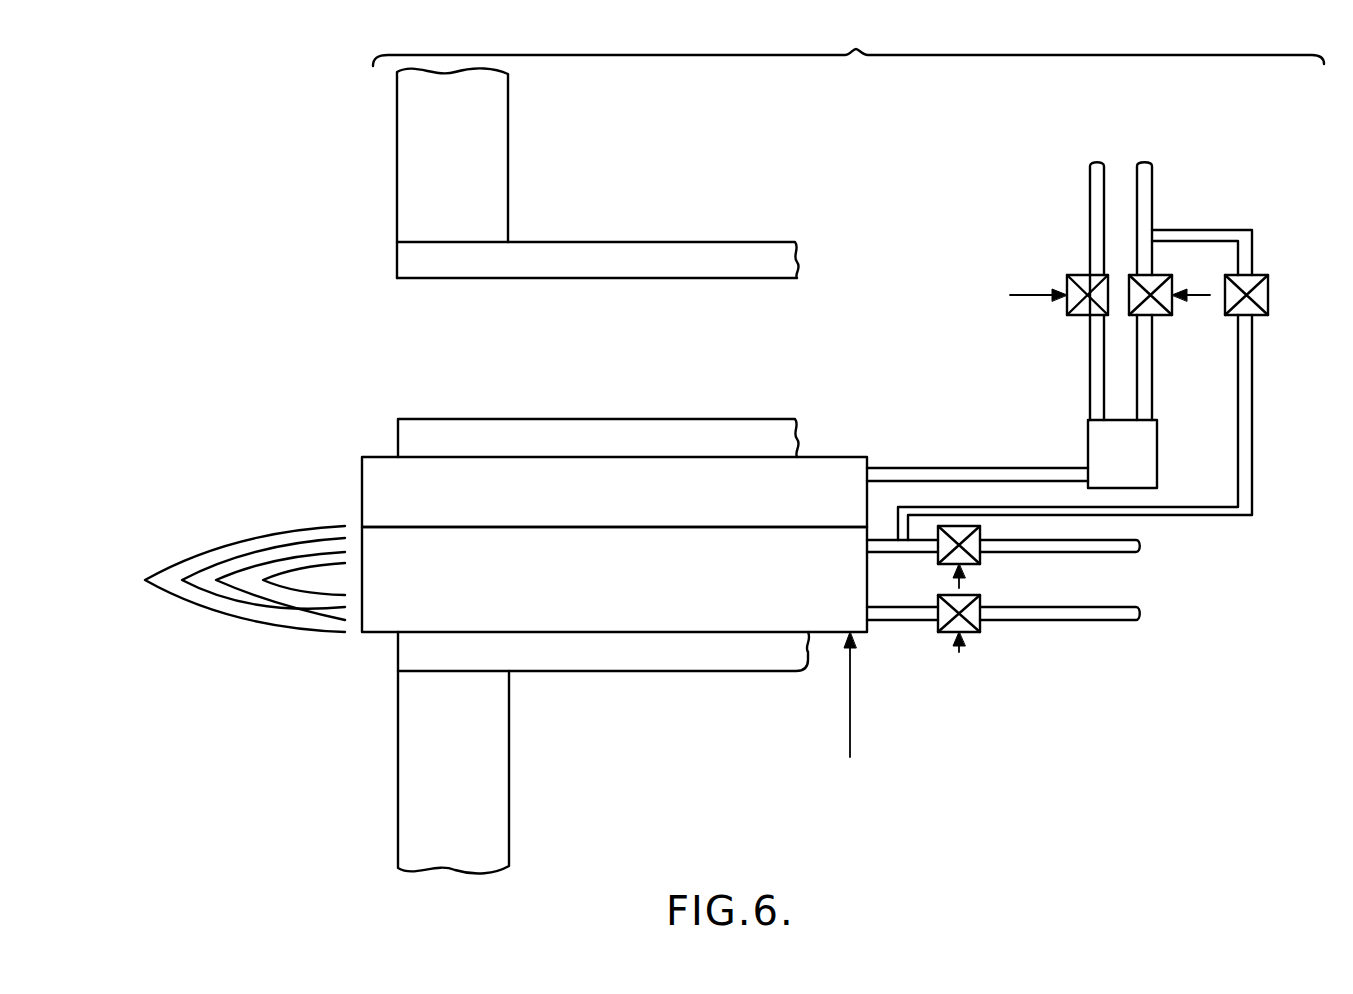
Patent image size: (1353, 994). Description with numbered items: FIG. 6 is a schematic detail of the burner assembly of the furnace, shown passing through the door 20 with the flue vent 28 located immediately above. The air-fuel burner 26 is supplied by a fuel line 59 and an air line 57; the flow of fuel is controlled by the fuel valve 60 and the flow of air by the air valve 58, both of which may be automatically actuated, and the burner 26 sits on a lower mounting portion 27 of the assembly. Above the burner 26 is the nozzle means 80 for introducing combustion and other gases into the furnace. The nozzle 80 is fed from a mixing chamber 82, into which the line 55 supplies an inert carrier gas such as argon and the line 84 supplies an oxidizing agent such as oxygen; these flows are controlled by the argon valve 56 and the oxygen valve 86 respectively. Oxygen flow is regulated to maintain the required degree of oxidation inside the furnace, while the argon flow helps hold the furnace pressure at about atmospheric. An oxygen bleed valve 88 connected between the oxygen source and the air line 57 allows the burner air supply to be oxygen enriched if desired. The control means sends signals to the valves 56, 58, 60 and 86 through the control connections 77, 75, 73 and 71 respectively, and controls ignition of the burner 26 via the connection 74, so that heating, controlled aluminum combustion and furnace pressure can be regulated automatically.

The door 20 is at (508, 148).
The air-fuel burner 26 is at (614, 579).
The lower flange 27 is at (727, 671).
The exhaust or flue vent 28 is at (653, 309).
The inert carrier gas line 55 is at (1090, 372).
The argon valve 56 is at (1065, 285).
The air line 57 is at (880, 554).
The air valve 58 is at (980, 560).
The fuel line 59 is at (887, 620).
The fuel valve 60 is at (980, 630).
The control connection 71 is at (1200, 295).
The control connection 73 is at (962, 660).
The ignition control connection 74 is at (850, 745).
The control connection 75 is at (965, 580).
The control connection 77 is at (1020, 295).
The nozzle means 80 is at (614, 492).
The mixing chamber 82 is at (1157, 455).
The oxygen line 84 is at (1152, 385).
The oxygen valve 86 is at (1162, 282).
The oxygen bleed valve 88 is at (1268, 295).